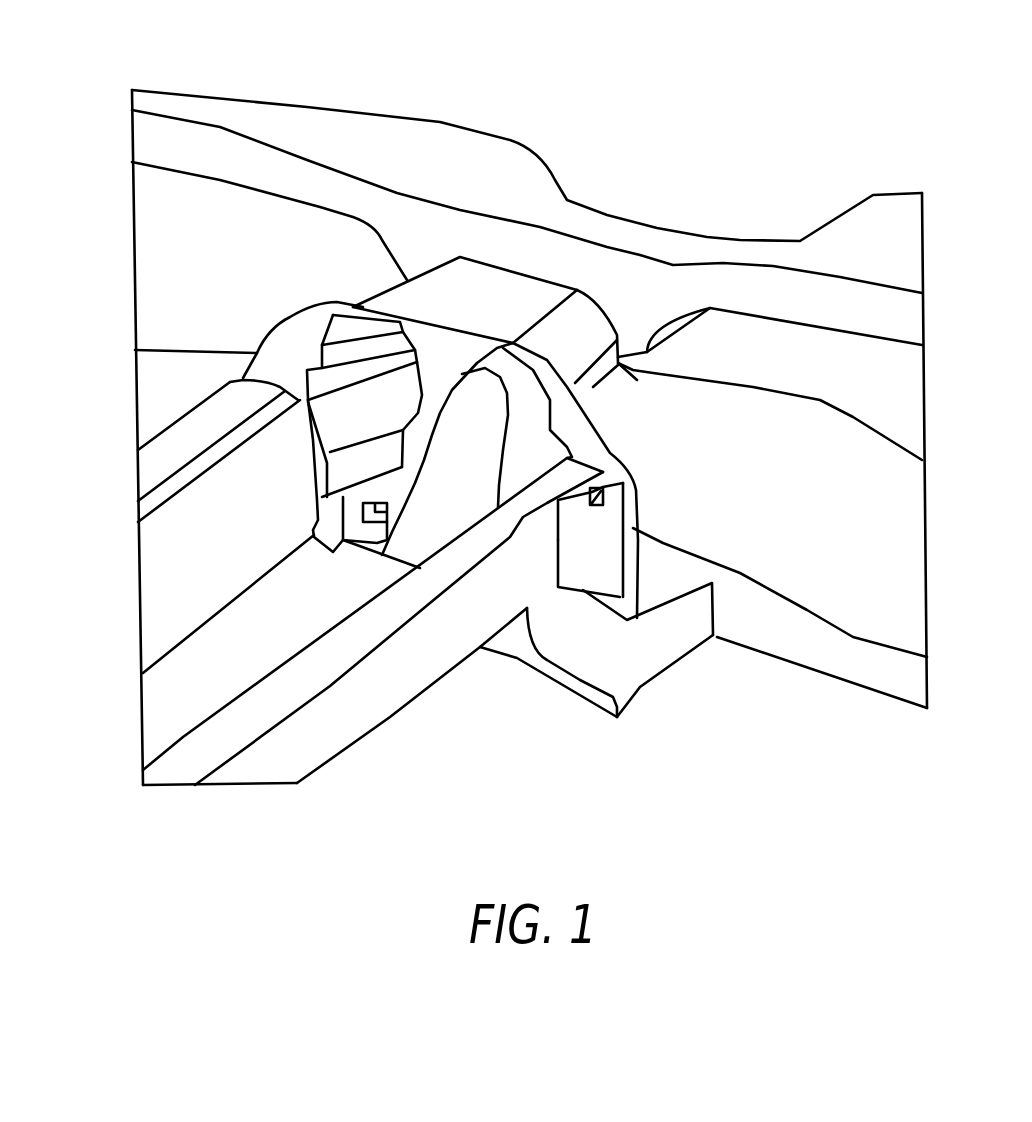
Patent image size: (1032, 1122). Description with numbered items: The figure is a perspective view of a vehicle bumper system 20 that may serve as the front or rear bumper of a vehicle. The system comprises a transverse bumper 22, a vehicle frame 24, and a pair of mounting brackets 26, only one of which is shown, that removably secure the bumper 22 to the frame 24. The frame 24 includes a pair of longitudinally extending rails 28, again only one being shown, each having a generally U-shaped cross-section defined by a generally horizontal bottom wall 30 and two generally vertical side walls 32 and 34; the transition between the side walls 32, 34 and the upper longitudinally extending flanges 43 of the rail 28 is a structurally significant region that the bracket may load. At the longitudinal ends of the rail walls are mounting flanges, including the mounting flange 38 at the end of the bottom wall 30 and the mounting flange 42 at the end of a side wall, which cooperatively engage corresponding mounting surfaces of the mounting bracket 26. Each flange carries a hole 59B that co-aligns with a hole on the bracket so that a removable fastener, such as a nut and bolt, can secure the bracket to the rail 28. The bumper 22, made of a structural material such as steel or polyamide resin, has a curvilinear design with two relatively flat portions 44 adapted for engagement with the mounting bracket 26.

The vehicle bumper system 20 is at (638, 163).
The transverse bumper 22 is at (312, 130).
The vehicle frame 24 is at (174, 826).
The mounting bracket 26 is at (642, 688).
The longitudinally extending rail 28 is at (317, 771).
The bottom wall 30 is at (165, 723).
The side wall 32 is at (158, 560).
The side wall 34 is at (375, 688).
The mounting flange 38 is at (498, 640).
The mounting flange 42 is at (600, 552).
The upper longitudinally extending flange 43 is at (163, 457).
The flat portion 44 is at (643, 293).
The hole 59B is at (603, 488).